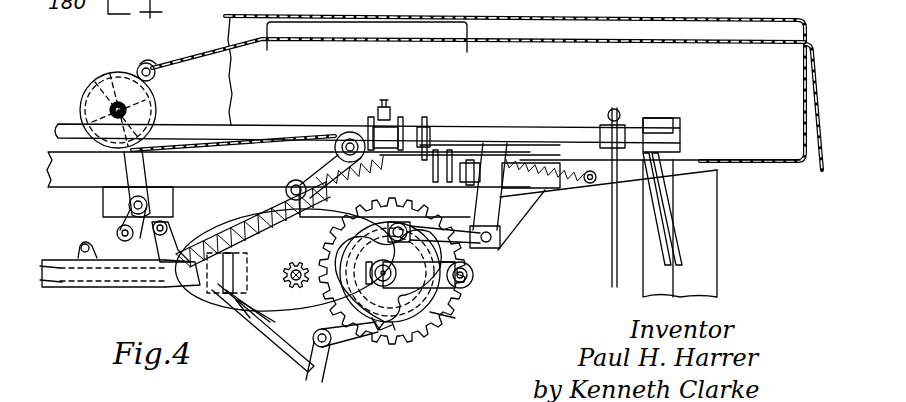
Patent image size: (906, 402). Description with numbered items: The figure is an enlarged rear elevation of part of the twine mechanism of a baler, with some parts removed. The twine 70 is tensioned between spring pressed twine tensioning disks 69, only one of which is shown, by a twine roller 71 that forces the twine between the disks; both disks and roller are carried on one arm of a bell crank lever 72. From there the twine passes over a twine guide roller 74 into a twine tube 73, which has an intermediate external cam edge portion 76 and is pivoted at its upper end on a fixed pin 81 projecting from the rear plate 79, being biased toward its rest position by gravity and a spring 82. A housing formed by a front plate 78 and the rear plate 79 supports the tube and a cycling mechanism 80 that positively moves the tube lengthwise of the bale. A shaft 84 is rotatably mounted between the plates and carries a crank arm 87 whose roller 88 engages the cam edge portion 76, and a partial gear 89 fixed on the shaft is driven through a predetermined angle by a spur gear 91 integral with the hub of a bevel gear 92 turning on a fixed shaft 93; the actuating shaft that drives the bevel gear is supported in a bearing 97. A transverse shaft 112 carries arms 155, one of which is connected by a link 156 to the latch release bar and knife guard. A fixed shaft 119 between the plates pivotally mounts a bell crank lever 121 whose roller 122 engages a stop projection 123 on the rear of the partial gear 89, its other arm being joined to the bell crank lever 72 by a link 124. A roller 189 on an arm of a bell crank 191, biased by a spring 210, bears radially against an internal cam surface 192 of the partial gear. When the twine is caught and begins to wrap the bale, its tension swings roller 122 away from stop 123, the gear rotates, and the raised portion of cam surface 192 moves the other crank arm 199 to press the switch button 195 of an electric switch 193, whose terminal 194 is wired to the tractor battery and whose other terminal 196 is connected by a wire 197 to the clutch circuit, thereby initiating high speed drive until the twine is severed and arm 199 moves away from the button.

The twine tensioning disks 69 is at (157, 108).
The twine 70 is at (212, 58).
The twine roller 71 is at (140, 65).
The bell crank lever 72 is at (142, 172).
The twine tube 73 is at (72, 287).
The twine guide roller 74 is at (350, 132).
The external cam edge portion 76 is at (212, 306).
The front plate 78 is at (300, 352).
The rear plate 79 is at (300, 288).
The cycling mechanism 80 is at (70, 258).
The fixed pin 81 is at (288, 184).
The spring 82 is at (170, 290).
The shaft 84 is at (390, 288).
The crank arm 87 is at (444, 304).
The roller 88 is at (474, 284).
The partial gear 89 is at (452, 330).
The spur gear 91 is at (298, 290).
The bevel gear 92 is at (262, 330).
The fixed shaft 93 is at (318, 196).
The bearing 97 is at (228, 318).
The transverse shaft 112 is at (540, 138).
The fixed shaft 119 is at (328, 346).
The bell crank lever 121 is at (333, 368).
The roller 122 is at (378, 334).
The stop projection 123 is at (418, 342).
The link 124 is at (272, 364).
The arms 155 is at (610, 112).
The link 156 is at (610, 254).
The roller 189 is at (382, 237).
The bell crank 191 is at (472, 266).
The internal cam surface 192 is at (464, 327).
The electric switch 193 is at (436, 175).
The terminal 194 is at (375, 173).
The switch button 195 is at (470, 168).
The terminal 196 is at (462, 188).
The wire 197 is at (665, 258).
The crank arm 199 is at (540, 198).
The spring 210 is at (584, 184).